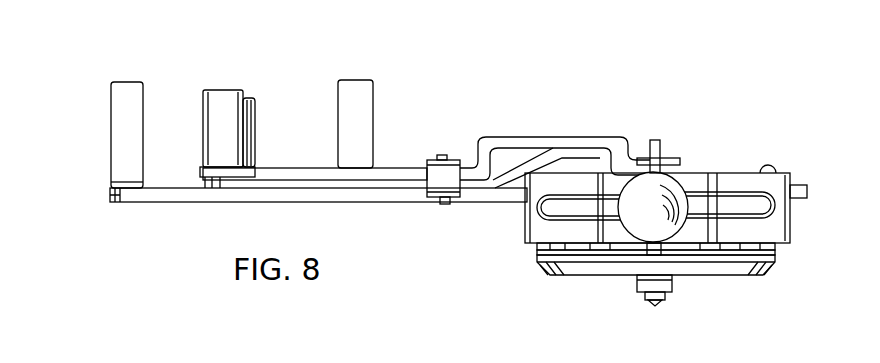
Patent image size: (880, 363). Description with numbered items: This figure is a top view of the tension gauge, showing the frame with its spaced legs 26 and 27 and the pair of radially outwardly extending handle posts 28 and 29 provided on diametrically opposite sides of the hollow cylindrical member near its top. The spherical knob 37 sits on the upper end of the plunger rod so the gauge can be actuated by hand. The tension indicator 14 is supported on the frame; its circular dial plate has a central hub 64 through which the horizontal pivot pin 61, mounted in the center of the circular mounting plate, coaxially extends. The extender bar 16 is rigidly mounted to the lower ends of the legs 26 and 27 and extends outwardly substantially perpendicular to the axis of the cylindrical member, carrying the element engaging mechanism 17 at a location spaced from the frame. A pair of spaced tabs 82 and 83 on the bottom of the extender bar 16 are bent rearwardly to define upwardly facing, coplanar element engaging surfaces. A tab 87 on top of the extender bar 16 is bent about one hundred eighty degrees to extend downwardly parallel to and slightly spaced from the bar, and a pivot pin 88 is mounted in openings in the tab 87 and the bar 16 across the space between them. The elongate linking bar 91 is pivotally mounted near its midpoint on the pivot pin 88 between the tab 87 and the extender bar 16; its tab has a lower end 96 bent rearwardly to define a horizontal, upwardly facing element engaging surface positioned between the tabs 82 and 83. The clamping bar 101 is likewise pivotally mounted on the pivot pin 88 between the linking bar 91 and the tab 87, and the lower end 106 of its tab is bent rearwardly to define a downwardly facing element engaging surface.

The tension indicator 14 is at (775, 263).
The extender bar 16 is at (303, 196).
The element engaging mechanism 17 is at (200, 214).
The leg 26 is at (530, 226).
The leg 27 is at (780, 218).
The handle post 28 is at (563, 212).
The handle post 29 is at (745, 205).
The spherical knob 37 is at (660, 195).
The pivot pin 61 is at (655, 306).
The central hub 64 is at (645, 283).
The tab 82 is at (360, 111).
The tab 83 is at (123, 127).
The tab 87 is at (441, 170).
The pivot pin 88 is at (445, 204).
The linking bar 91 is at (570, 150).
The lower end of tab 96 is at (250, 117).
The clamping bar 101 is at (308, 176).
The lower end of tab 106 is at (218, 103).